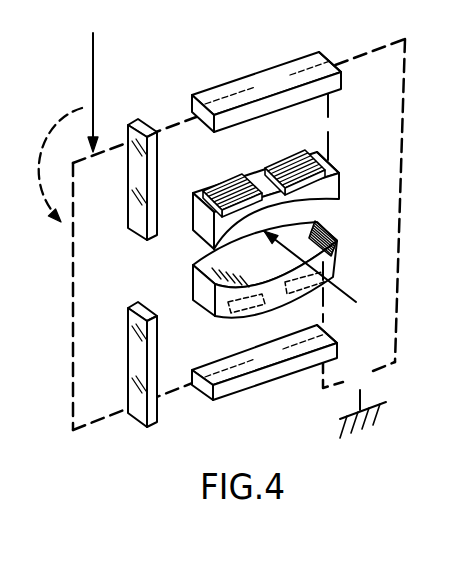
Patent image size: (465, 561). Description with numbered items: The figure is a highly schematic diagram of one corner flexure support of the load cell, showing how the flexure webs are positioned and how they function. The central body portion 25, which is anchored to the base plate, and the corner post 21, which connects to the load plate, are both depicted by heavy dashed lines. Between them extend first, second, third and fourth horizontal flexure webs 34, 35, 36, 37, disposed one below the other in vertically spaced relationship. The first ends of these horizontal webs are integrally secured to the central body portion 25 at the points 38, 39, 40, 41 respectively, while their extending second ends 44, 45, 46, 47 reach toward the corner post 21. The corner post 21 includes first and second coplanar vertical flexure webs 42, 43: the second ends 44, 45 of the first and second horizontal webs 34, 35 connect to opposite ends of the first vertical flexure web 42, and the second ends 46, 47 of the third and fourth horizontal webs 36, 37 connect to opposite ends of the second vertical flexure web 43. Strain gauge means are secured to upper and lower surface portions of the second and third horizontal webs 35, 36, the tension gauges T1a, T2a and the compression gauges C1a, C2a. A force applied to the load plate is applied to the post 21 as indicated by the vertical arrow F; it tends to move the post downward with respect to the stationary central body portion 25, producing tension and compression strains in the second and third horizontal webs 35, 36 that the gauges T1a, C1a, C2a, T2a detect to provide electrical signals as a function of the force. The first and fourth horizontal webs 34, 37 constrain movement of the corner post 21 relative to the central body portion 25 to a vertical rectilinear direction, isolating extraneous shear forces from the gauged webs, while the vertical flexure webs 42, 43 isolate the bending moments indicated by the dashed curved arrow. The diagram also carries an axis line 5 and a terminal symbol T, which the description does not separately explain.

The corner post 21 is at (71, 285).
The central body portion 25 is at (403, 124).
The first horizontal flexure web 34 is at (250, 75).
The second horizontal flexure web 35 is at (264, 186).
The third horizontal flexure web 36 is at (263, 272).
The fourth horizontal flexure web 37 is at (271, 372).
The first end of first horizontal flexure web 38 is at (320, 53).
The first end of second horizontal flexure web 39 is at (328, 162).
The first end of third horizontal flexure web 40 is at (332, 231).
The first end of fourth horizontal flexure web 41 is at (327, 336).
The first vertical flexure web 42 is at (138, 180).
The second vertical flexure web 43 is at (138, 367).
The second end of first horizontal flexure web 44 is at (193, 102).
The second end of second horizontal flexure web 45 is at (193, 205).
The second end of third horizontal flexure web 46 is at (193, 300).
The second end of fourth horizontal flexure web 47 is at (198, 392).
The rocking axis 5 is at (318, 267).
The force F is at (100, 85).
The terminal T is at (363, 403).
The compression strain gauge C1a is at (232, 178).
The tension strain gauge T1a is at (291, 161).
The compression strain gauge C2a is at (304, 301).
The tension strain gauge T2a is at (230, 317).